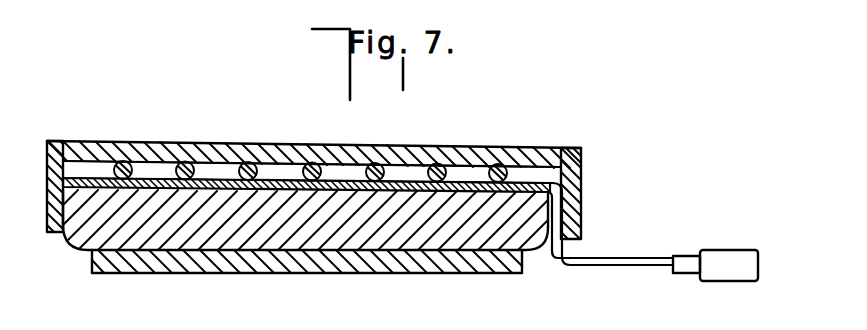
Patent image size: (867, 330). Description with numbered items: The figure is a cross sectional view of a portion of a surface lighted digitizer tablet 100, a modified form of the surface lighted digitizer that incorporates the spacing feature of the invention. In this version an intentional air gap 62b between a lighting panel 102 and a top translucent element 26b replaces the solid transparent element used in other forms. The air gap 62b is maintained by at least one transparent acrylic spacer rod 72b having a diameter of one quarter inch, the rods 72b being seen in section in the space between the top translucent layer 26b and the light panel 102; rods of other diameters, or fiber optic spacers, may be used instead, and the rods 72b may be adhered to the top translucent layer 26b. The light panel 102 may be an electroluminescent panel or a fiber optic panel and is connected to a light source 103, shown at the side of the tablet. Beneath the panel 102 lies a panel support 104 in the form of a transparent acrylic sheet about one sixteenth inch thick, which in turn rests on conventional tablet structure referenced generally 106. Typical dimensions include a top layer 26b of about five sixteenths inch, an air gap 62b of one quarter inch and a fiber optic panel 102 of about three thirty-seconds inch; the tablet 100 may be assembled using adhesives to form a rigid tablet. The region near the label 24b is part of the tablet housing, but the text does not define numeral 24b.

The digitizer tablet 100 is at (596, 92).
The lighting panel 102 is at (148, 183).
The light source 103 is at (747, 254).
The panel support 104 is at (477, 186).
The conventional tablet structure 106 is at (82, 236).
The housing side wall 24b is at (144, 172).
The top translucent element 26b is at (207, 142).
The air gap 62b is at (109, 168).
The transparent acrylic spacer rod 72b is at (312, 132).